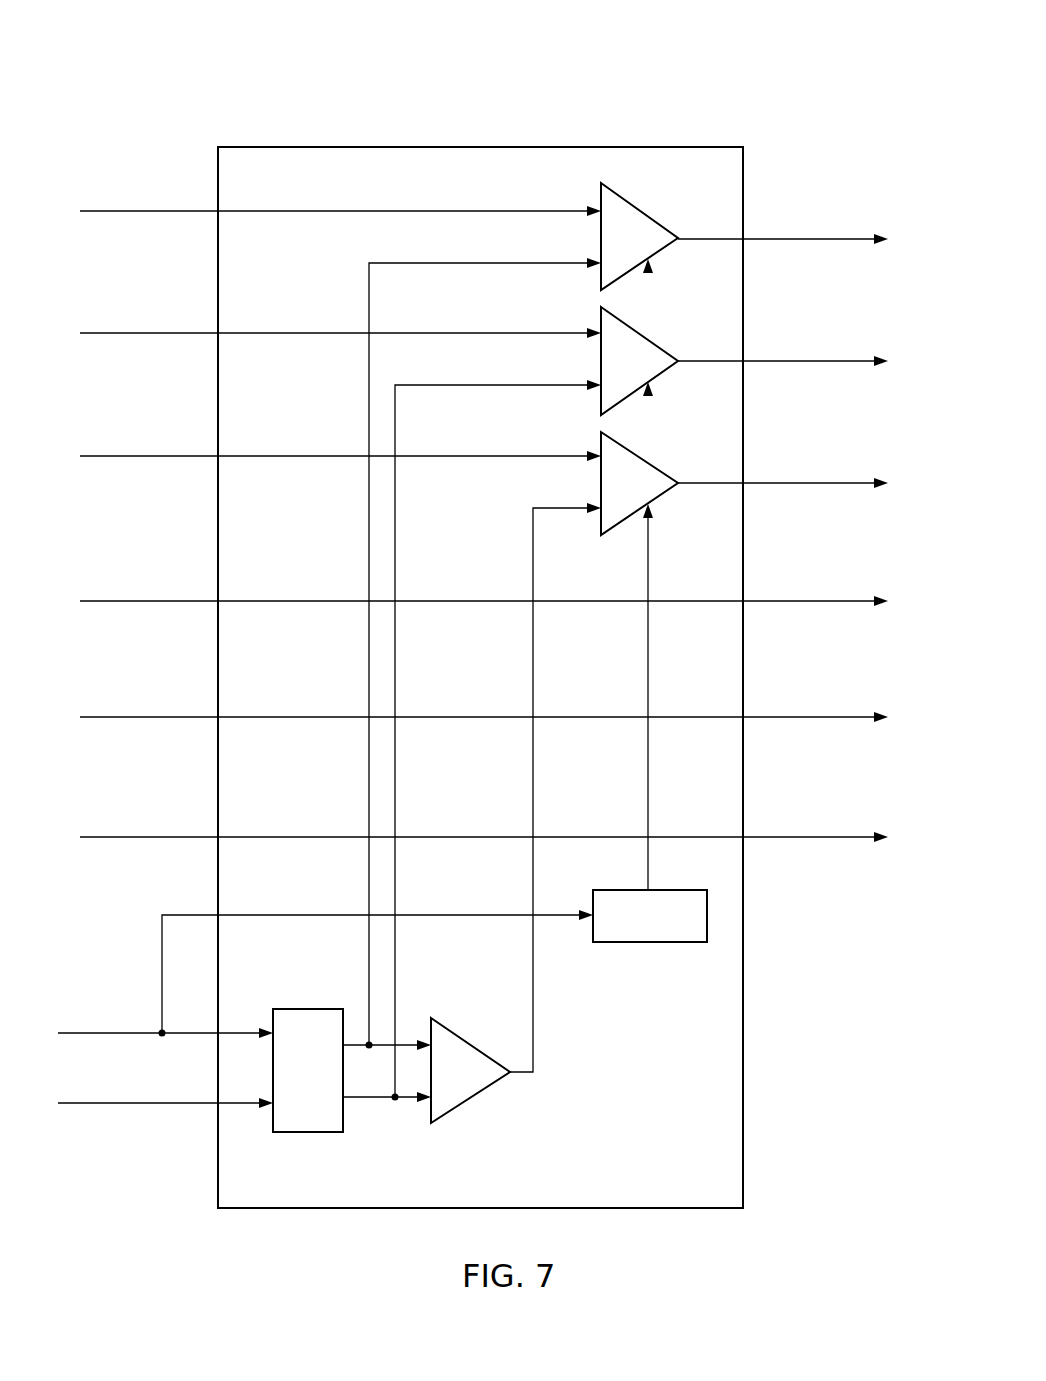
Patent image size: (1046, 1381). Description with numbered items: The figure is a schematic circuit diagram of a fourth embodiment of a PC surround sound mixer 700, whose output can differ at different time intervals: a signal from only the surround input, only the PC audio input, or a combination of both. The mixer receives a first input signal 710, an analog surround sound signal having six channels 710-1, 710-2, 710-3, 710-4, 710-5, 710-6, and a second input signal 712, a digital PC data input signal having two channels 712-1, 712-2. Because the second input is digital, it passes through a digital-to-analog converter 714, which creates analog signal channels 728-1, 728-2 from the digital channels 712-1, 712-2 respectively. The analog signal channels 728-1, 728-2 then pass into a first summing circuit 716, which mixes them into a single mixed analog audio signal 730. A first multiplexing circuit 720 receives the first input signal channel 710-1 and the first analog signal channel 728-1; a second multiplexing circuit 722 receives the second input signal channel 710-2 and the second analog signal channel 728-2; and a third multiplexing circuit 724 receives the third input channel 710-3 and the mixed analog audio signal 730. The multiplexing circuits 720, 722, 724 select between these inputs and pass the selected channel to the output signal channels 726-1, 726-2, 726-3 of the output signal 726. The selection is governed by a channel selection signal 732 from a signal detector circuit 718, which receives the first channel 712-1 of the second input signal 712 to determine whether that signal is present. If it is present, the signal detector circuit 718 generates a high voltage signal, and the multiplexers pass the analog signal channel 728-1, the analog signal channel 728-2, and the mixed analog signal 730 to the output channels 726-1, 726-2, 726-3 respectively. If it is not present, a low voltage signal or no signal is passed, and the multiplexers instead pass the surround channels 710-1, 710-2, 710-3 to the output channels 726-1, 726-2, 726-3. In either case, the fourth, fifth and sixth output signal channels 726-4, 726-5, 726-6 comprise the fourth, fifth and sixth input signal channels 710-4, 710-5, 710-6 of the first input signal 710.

The PC surround sound mixer 700 is at (706, 122).
The first input signal 710 is at (138, 112).
The first input signal channel 710-1 is at (157, 210).
The second input signal channel 710-2 is at (157, 332).
The third input signal channel 710-3 is at (157, 455).
The fourth input signal channel 710-4 is at (157, 600).
The fifth input signal channel 710-5 is at (157, 716).
The sixth input signal channel 710-6 is at (157, 836).
The second input signal 712 is at (108, 1215).
The first input signal channel of second input signal 712-1 is at (108, 1032).
The second input signal channel of second input signal 712-2 is at (102, 1105).
The digital-to-analog converter 714 is at (291, 1133).
The first summing circuit 716 is at (455, 1098).
The signal detector circuit 718 is at (695, 932).
The first multiplexing circuit 720 is at (656, 232).
The second multiplexing circuit 722 is at (656, 355).
The third multiplexing circuit 724 is at (656, 476).
The output signal 726 is at (829, 880).
The first output signal channel 726-1 is at (806, 238).
The second output signal channel 726-2 is at (806, 360).
The third output signal channel 726-3 is at (806, 482).
The fourth output signal channel 726-4 is at (806, 600).
The fifth output signal channel 726-5 is at (806, 716).
The sixth output signal channel 726-6 is at (806, 836).
The first analog signal channel 728-1 is at (367, 792).
The second analog signal channel 728-2 is at (397, 817).
The mixed analog audio signal 730 is at (536, 1028).
The channel selection signal 732 is at (646, 847).